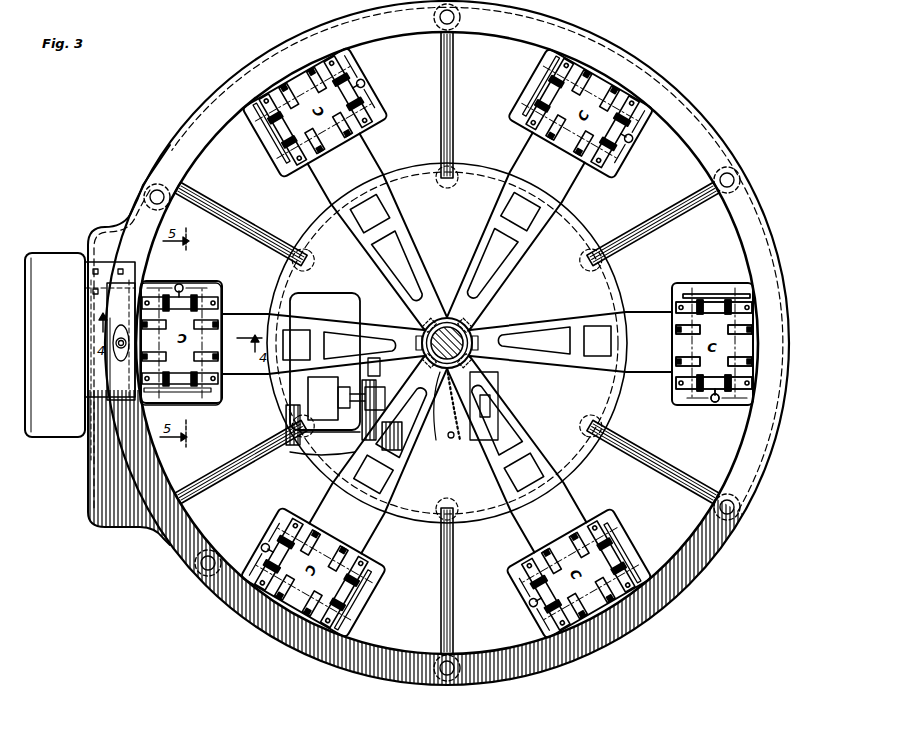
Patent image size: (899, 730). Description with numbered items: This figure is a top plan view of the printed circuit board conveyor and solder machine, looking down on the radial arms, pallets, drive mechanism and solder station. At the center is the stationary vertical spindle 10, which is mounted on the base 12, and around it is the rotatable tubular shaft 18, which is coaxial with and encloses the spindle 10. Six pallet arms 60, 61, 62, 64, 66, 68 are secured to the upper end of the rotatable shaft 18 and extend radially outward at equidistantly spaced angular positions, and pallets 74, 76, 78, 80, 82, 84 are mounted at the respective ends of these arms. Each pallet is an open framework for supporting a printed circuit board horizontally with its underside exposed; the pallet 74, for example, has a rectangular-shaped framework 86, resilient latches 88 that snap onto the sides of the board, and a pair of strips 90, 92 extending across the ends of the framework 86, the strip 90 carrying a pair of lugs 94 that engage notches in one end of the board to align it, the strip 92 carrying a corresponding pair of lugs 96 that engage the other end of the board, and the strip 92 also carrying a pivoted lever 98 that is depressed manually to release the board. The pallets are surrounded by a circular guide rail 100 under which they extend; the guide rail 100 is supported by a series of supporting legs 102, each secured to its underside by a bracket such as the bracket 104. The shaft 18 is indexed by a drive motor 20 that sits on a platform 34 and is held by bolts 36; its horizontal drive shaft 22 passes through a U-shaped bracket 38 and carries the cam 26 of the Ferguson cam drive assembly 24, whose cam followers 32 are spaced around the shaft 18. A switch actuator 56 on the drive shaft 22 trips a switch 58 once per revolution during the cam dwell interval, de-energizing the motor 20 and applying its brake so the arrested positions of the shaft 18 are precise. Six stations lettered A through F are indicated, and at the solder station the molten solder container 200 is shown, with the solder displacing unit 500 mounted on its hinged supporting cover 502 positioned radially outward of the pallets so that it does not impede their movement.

The stationary vertical spindle 10 is at (425, 333).
The base 12 is at (420, 213).
The rotatable tubular shaft 18 is at (447, 318).
The drive motor 20 is at (343, 297).
The horizontal drive shaft 22 is at (338, 396).
The Ferguson three-dimensional cam drive assembly 24 is at (457, 440).
The cam 26 is at (448, 432).
The cam followers 32 is at (478, 332).
The platform 34 is at (290, 421).
The bolts 36 is at (298, 441).
The U-shaped bracket 38 is at (500, 383).
The switch actuator 56 is at (404, 445).
The switch 58 is at (372, 368).
The pallet arm 60 is at (573, 506).
The pallet arm 61 is at (625, 311).
The pallet arm 62 is at (573, 177).
The pallet arm 64 is at (374, 168).
The pallet arm 66 is at (286, 375).
The pallet arm 68 is at (372, 521).
The pallet 74 is at (728, 399).
The pallet 76 is at (531, 82).
The pallet 78 is at (270, 147).
The pallet 80 is at (150, 290).
The pallet 82 is at (370, 598).
The pallet 84 is at (634, 547).
The rectangular-shaped framework 86 is at (721, 292).
The resilient latches 88 is at (688, 360).
The strip 90 is at (712, 300).
The strip 92 is at (693, 380).
The lugs 94 is at (698, 304).
The clamps 96 is at (700, 393).
The pivoted lever 98 is at (713, 403).
The circular guide rail 100 is at (228, 78).
The supporting legs 102 is at (454, 146).
The bracket 104 is at (146, 190).
The molten solder container 200 is at (192, 322).
The solder displacing unit 500 is at (117, 353).
The hinged supporting cover 502 is at (113, 308).